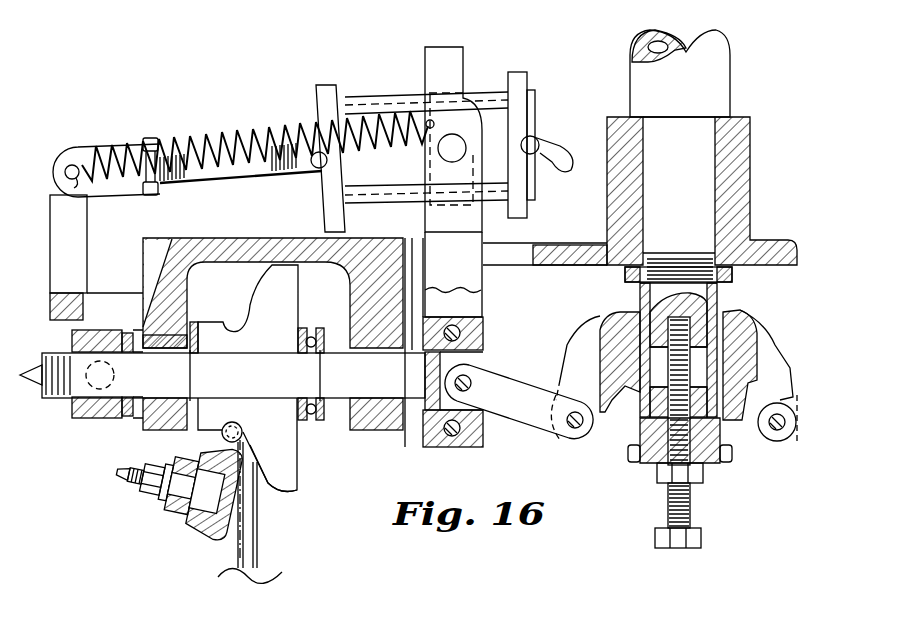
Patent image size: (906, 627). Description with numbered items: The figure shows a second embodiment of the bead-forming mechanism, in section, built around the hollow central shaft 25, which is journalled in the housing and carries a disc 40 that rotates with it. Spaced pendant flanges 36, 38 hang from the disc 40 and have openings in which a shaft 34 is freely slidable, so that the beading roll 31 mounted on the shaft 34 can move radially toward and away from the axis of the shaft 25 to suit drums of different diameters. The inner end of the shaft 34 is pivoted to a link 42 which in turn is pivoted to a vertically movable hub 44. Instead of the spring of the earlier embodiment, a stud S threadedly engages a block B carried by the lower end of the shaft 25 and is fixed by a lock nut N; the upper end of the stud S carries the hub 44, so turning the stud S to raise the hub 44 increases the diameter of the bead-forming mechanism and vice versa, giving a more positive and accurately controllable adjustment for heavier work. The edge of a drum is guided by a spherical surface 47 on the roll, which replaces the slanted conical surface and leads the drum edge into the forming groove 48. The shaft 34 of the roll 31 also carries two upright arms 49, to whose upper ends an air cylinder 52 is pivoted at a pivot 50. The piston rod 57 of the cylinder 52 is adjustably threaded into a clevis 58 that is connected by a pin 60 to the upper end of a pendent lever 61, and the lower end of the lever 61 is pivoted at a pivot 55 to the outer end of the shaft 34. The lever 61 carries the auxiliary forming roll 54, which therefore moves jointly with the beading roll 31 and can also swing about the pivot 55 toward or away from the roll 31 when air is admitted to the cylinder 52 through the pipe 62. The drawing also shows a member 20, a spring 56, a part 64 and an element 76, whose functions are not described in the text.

The rod 20 is at (262, 575).
The hollow shaft 25 is at (680, 73).
The beading roll 31 is at (297, 474).
The shaft 34 is at (233, 375).
The pendant flange 36 is at (145, 330).
The pendant flange 38 is at (348, 322).
The disc 40 is at (298, 238).
The link 42 is at (538, 436).
The hub 44 is at (600, 320).
The spherical surface (radius) 47 is at (268, 486).
The forming groove 48 is at (242, 326).
The upright arm 49 is at (428, 238).
The pivot 50 is at (466, 150).
The air cylinder 52 is at (508, 108).
The forming roll 54 is at (192, 532).
The pivot 55 is at (98, 392).
The spring 56 is at (262, 144).
The piston rod 57 is at (233, 173).
The clevis 58 is at (104, 190).
The pin 60 is at (65, 172).
The pendent lever 61 is at (87, 275).
The pipe 62 is at (580, 140).
The clamp 64 is at (214, 546).
The block 76 is at (158, 140).
The block B is at (713, 432).
The lock nut N is at (703, 474).
The stud S is at (690, 525).